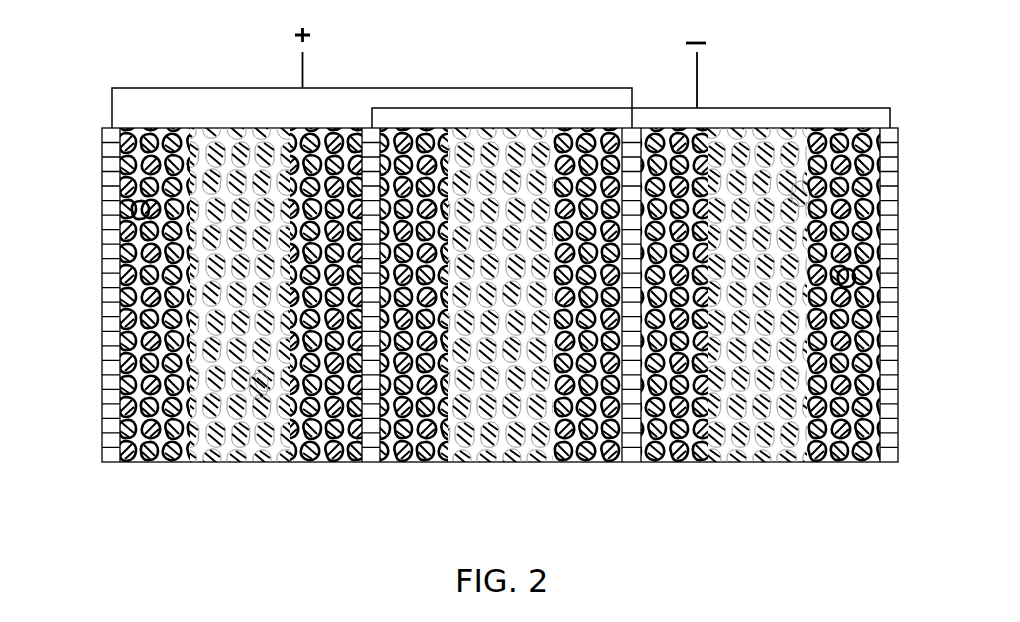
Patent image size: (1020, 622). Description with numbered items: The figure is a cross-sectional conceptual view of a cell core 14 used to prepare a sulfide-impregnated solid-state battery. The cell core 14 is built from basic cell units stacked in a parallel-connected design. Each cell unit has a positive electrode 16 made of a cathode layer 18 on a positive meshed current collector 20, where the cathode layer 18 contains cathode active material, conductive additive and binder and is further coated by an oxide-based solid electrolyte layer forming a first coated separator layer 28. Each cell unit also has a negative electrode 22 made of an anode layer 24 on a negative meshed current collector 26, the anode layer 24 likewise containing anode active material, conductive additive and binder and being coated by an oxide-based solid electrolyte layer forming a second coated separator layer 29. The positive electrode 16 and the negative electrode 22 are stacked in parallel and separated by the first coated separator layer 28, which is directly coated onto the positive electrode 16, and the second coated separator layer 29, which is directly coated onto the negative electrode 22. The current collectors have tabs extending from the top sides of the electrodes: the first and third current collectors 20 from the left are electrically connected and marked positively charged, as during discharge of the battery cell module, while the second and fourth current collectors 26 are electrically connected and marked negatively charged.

The cell core 14 is at (154, 51).
The positive electrode 16 is at (143, 203).
The cathode layer 18 is at (135, 210).
The positive meshed current collector 20 is at (110, 447).
The negative electrode 22 is at (832, 250).
The anode layer 24 is at (847, 277).
The negative meshed current collector 26 is at (888, 442).
The first coated separator layer 28 is at (197, 385).
The second coated separator layer 29 is at (258, 385).